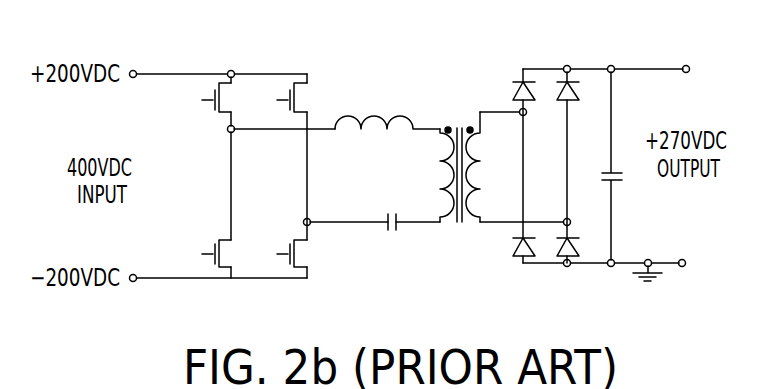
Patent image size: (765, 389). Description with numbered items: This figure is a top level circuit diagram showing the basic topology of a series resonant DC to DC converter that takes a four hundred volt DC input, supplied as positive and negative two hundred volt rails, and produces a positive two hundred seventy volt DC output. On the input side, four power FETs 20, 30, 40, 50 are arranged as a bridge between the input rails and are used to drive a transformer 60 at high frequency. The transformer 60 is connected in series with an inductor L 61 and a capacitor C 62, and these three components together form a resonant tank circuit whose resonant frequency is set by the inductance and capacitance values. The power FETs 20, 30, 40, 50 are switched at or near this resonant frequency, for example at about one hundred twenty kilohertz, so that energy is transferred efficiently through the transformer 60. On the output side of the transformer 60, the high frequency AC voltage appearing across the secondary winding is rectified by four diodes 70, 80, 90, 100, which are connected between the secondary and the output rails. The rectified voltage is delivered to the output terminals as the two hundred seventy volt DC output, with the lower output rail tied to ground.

The power FET 20 is at (188, 98).
The power FET 30 is at (263, 95).
The power FET 40 is at (188, 250).
The power FET 50 is at (265, 279).
The transformer 60 is at (440, 173).
The inductor L 61 is at (368, 115).
The capacitor C 62 is at (383, 234).
The diode 70 is at (511, 86).
The diode 80 is at (585, 80).
The diode 90 is at (517, 245).
The diode 100 is at (578, 250).